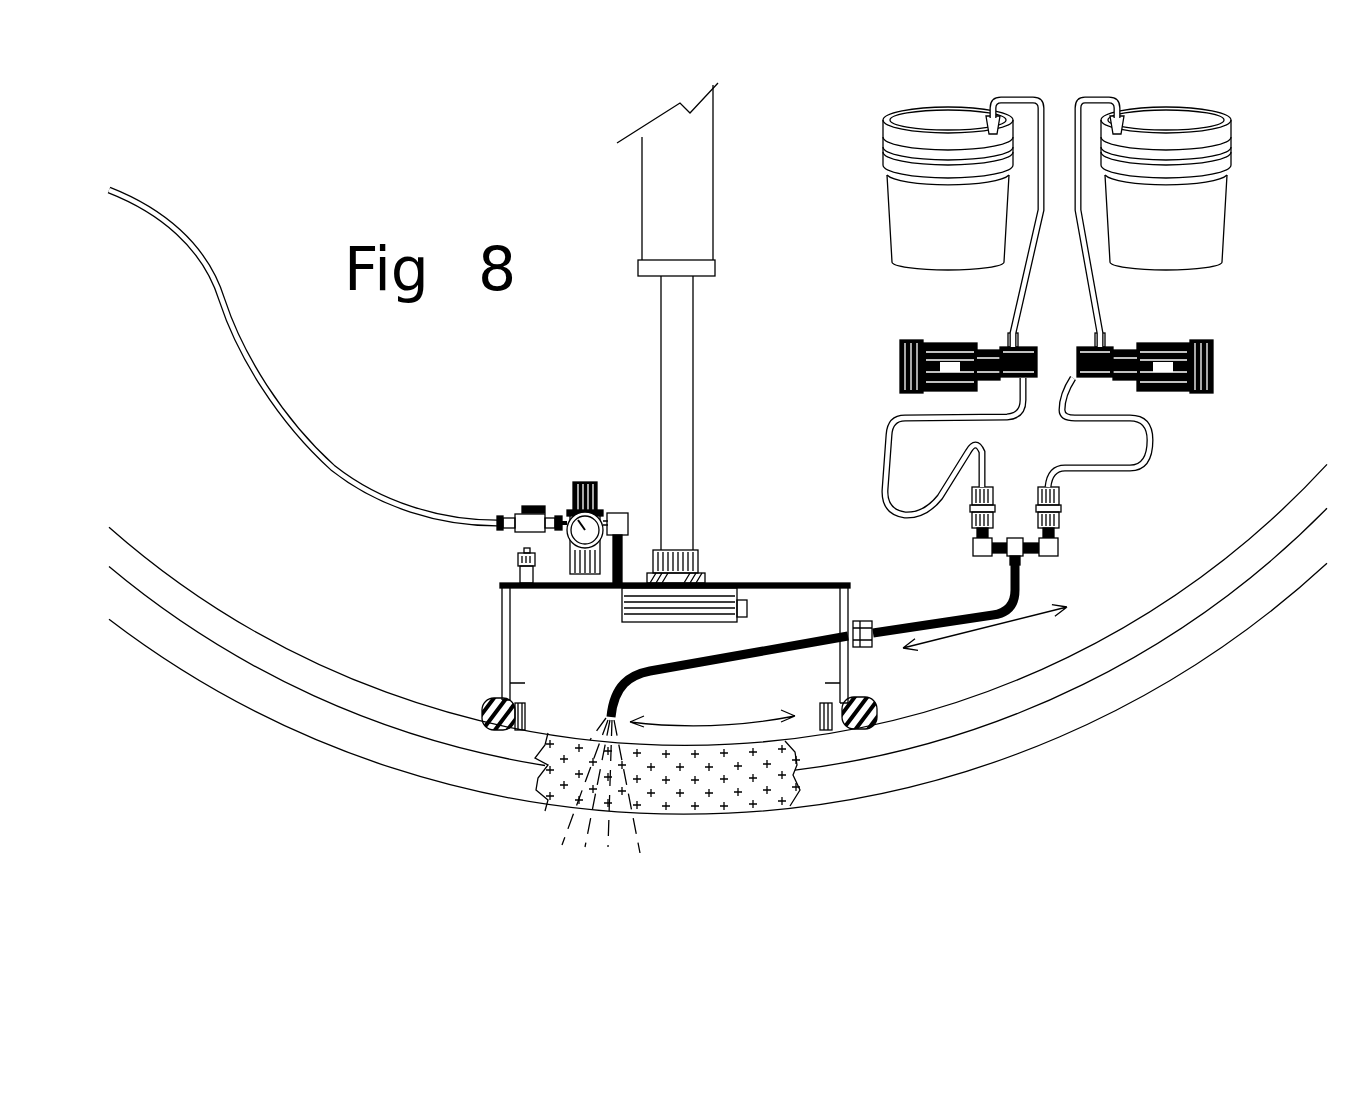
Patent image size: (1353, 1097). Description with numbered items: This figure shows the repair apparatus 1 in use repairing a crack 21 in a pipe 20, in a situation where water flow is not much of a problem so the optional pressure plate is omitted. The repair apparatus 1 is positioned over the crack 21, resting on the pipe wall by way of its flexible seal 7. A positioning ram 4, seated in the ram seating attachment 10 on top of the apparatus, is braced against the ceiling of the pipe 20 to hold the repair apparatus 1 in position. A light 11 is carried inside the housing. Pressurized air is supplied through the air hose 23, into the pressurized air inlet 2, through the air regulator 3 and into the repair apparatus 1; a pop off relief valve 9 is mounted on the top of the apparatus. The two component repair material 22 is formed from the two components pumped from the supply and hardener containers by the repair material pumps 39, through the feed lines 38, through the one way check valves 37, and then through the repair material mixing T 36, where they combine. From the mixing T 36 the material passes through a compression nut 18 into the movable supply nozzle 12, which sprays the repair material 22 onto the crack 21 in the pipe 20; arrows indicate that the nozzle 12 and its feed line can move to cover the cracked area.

The repair apparatus 1 is at (770, 603).
The pressurized air inlet 2 is at (476, 515).
The air regulator 3 is at (566, 503).
The positioning ram 4 is at (683, 363).
The flexible seal 7 is at (485, 699).
The pop off relief valve 9 is at (512, 562).
The ram seating attachment 10 is at (700, 558).
The light 11 is at (613, 610).
The movable supply nozzle 12 is at (673, 667).
The compression nut 18 is at (874, 647).
The pipe 20 is at (310, 723).
The crack 21 is at (735, 800).
The repair material 22 is at (563, 830).
The air hose 23 is at (321, 450).
The repair material mixing T 36 is at (1030, 562).
The one way check valves 37 is at (968, 522).
The feed lines 38 is at (1057, 471).
The repair material pumps 39 is at (892, 357).